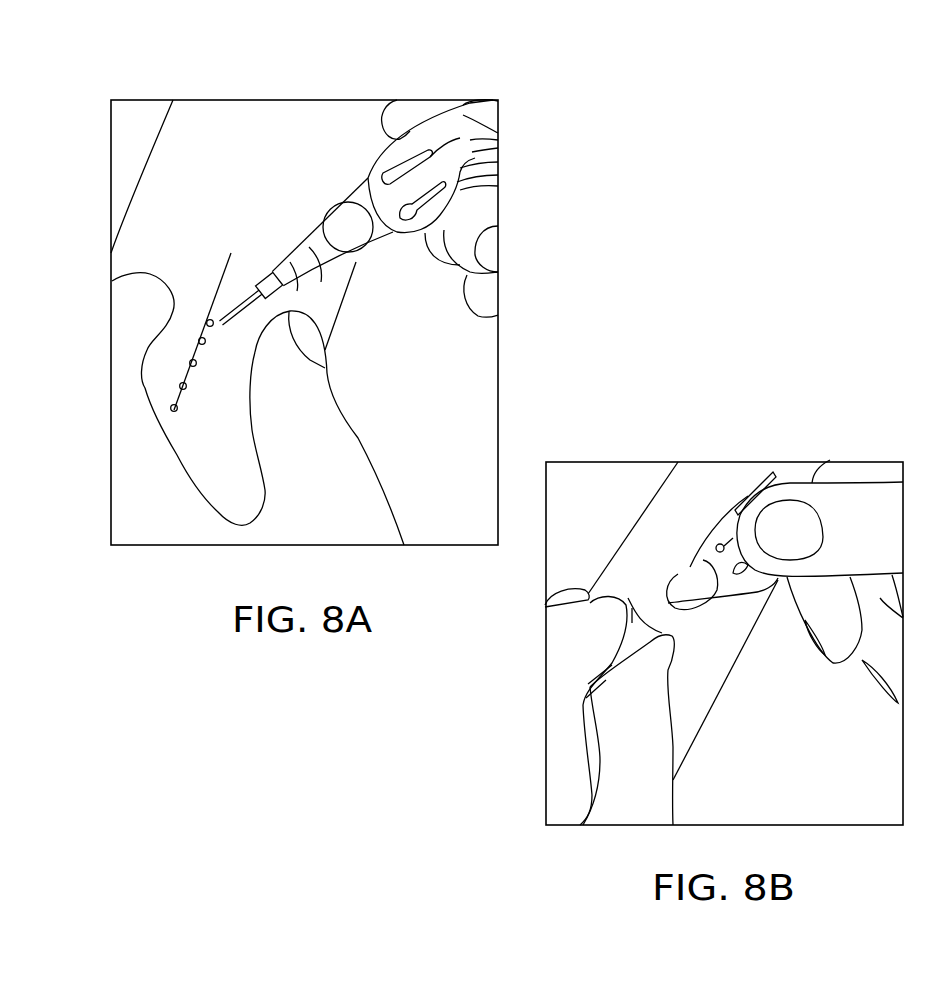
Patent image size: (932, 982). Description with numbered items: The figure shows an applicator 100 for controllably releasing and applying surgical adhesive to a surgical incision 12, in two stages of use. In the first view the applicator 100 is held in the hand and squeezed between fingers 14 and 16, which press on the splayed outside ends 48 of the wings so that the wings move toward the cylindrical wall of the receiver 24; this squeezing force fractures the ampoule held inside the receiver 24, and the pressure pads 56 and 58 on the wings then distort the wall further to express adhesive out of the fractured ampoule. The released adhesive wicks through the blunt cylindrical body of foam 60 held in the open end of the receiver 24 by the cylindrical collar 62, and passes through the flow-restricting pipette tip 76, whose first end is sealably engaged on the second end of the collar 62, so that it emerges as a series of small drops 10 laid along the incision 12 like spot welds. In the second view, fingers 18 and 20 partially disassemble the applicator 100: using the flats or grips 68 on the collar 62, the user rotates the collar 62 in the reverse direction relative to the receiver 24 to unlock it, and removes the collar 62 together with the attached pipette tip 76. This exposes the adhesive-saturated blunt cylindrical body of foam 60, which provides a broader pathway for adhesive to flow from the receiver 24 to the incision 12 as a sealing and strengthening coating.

In FIG. 8A, the small drops 10 is at (207, 321).
In FIG. 8A, the incision 12 is at (230, 255).
In FIG. 8A, the finger 14 is at (418, 112).
In FIG. 8B, the finger 14 is at (795, 470).
In FIG. 8A, the finger 16 is at (490, 237).
In FIG. 8B, the finger 16 is at (887, 520).
In FIG. 8A, the finger 18 is at (138, 317).
In FIG. 8B, the finger 18 is at (580, 757).
In FIG. 8A, the finger 20 is at (282, 397).
In FIG. 8B, the finger 20 is at (643, 810).
In FIG. 8B, the receiver 24 is at (715, 526).
In FIG. 8A, the outside end 48 is at (463, 109).
In FIG. 8A, the pressure pad 56 is at (498, 101).
In FIG. 8A, the pressure pad 58 is at (477, 160).
In FIG. 8B, the blunt cylindrical body of foam 60 is at (677, 582).
In FIG. 8A, the cylindrical collar 62 is at (355, 185).
In FIG. 8B, the cylindrical collar 62 is at (628, 598).
In FIG. 8A, the flat or grip 68 is at (333, 222).
In FIG. 8A, the pipette tip 76 is at (270, 272).
In FIG. 8A, the applicator 100 is at (473, 150).